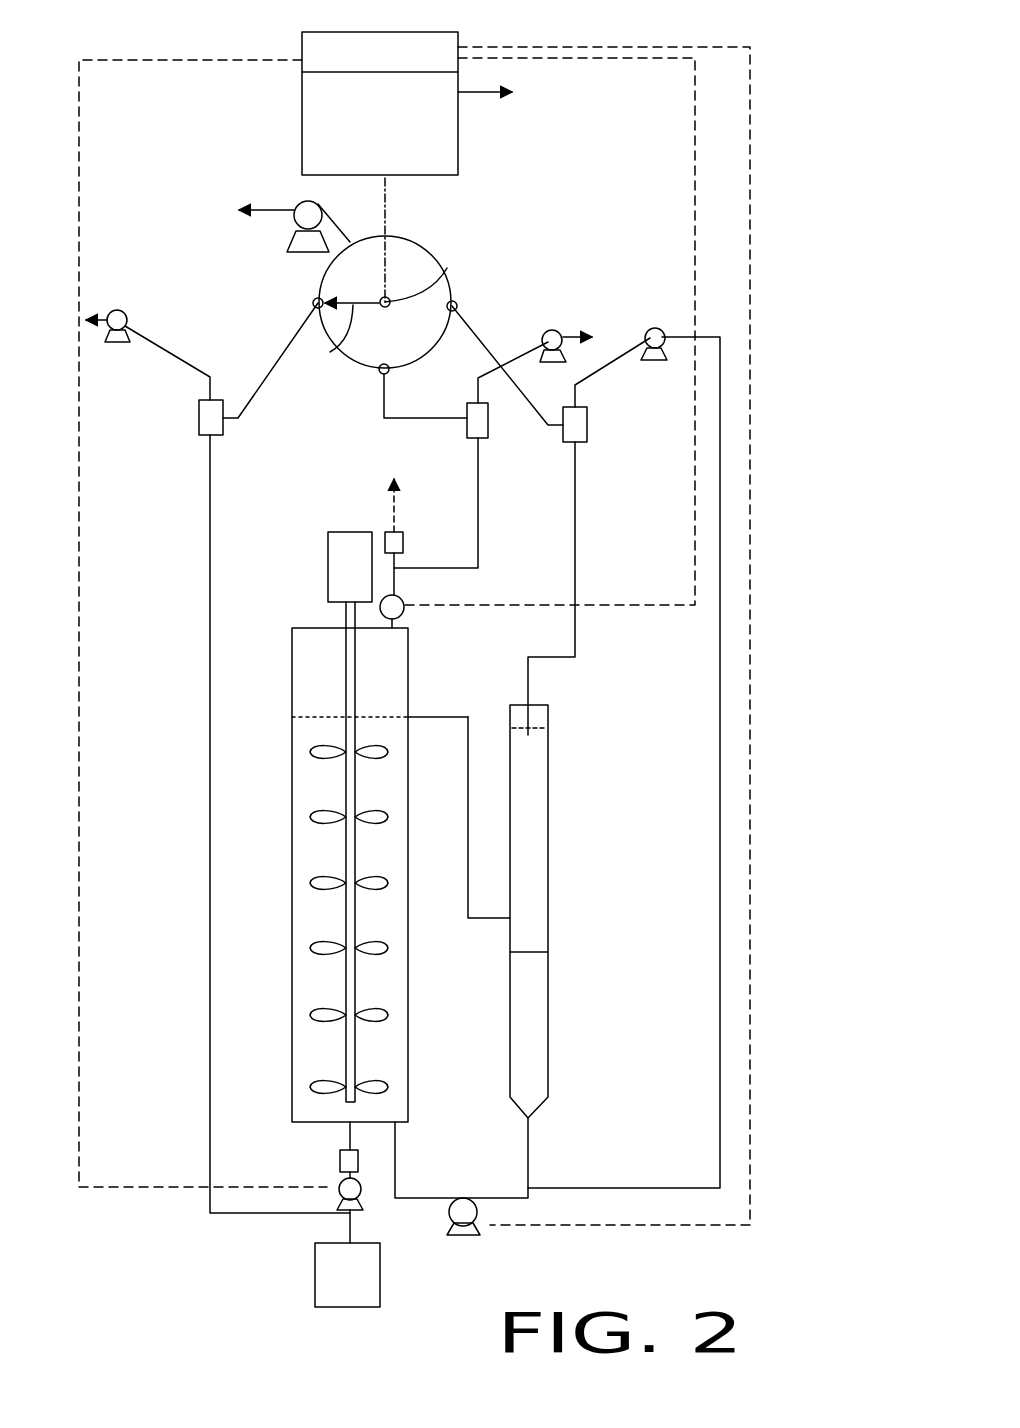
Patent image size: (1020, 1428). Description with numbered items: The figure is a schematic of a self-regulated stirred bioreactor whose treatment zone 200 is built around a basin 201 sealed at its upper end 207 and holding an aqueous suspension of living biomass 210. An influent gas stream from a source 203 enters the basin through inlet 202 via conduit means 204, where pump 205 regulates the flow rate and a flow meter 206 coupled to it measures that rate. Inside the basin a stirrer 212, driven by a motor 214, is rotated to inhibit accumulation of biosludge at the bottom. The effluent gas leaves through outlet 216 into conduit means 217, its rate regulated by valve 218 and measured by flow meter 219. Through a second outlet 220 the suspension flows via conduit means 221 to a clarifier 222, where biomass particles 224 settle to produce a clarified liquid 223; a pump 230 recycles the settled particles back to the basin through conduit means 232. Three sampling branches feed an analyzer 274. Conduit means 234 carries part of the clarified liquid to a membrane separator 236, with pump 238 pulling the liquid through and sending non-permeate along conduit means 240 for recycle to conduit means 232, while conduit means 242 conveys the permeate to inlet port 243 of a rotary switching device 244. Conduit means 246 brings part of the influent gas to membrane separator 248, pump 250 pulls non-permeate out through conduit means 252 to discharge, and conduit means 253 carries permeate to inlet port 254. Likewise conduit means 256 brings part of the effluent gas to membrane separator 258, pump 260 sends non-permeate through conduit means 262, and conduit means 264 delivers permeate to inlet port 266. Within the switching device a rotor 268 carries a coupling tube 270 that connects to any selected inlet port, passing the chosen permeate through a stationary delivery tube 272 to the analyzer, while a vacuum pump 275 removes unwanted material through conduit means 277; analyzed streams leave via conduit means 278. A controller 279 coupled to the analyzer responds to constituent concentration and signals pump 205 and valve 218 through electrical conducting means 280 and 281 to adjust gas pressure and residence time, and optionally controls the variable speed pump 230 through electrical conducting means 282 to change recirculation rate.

The treatment zone 200 is at (281, 1037).
The basin 201 is at (292, 925).
The inlet 202 is at (352, 1125).
The source 203 is at (375, 1275).
The conduit means 204 is at (345, 1226).
The pump 205 is at (340, 1186).
The flow meter 206 is at (340, 1160).
The upper end 207 is at (320, 628).
The aqueous suspension of living biomass 210 is at (395, 970).
The stirrer 212 is at (350, 655).
The motor 214 is at (340, 565).
The outlet 216 is at (400, 625).
The conduit means 217 is at (397, 520).
The valve 218 is at (404, 600).
The flow meter 219 is at (403, 545).
The second outlet 220 is at (410, 716).
The conduit means 221 is at (468, 810).
The clarifier 222 is at (548, 850).
The clarified liquid 223 is at (540, 920).
The biomass particles 224 is at (542, 1020).
The pump 230 is at (463, 1198).
The conduit means 232 is at (530, 1160).
The conduit means 234 is at (577, 480).
The membrane separator 236 is at (588, 418).
The pump 238 is at (658, 328).
The conduit means 240 is at (607, 370).
The conduit means 242 is at (483, 338).
The inlet port 243 is at (458, 304).
The rotary switching device 244 is at (383, 405).
The conduit means 246 is at (208, 678).
The membrane separator 248 is at (223, 428).
The pump 250 is at (112, 300).
The conduit means 252 is at (197, 349).
The conduit means 253 is at (262, 382).
The inlet port 254 is at (313, 299).
The conduit means 256 is at (479, 478).
The membrane separator 258 is at (467, 432).
The pump 260 is at (556, 320).
The conduit means 262 is at (493, 370).
The conduit means 264 is at (400, 418).
The inlet port 266 is at (390, 373).
The rotor 268 is at (446, 270).
The coupling tube 270 is at (343, 365).
The stationary delivery tube 272 is at (387, 255).
The analyzer 274 is at (302, 146).
The vacuum pump 275 is at (300, 203).
The conduit means 277 is at (349, 240).
The conduit means 278 is at (470, 95).
The controller 279 is at (345, 33).
The electrical conducting means 280 is at (82, 108).
The electrical conducting means 281 is at (693, 108).
The electrical conducting means 282 is at (750, 738).